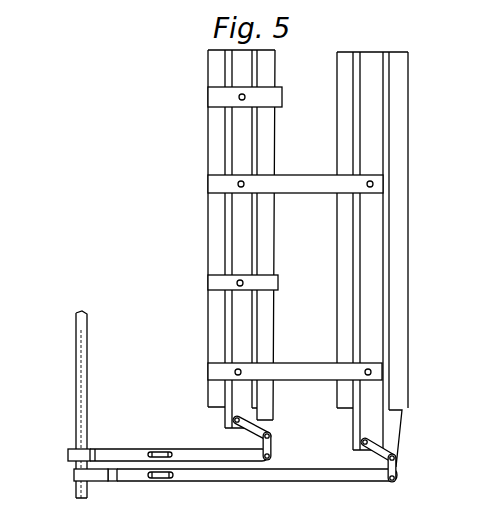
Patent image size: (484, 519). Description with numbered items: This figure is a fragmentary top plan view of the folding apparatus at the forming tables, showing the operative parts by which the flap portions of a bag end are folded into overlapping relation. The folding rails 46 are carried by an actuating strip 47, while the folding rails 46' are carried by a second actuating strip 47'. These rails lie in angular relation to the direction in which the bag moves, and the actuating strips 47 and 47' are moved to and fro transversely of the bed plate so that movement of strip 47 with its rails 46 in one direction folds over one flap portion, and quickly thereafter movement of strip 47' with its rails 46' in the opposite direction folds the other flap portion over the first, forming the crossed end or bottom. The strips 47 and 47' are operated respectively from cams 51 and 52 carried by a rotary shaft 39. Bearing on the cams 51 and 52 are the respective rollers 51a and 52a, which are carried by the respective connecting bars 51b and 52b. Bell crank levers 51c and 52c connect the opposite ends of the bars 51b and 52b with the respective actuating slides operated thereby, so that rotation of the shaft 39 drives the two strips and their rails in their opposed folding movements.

The rotary shaft 39 is at (83, 352).
The folding rail 46 is at (261, 184).
The folding rail 46' is at (295, 267).
The actuating strip 47 is at (220, 239).
The actuating strip 47' is at (387, 259).
The cam 51 is at (72, 452).
The roller 51a is at (95, 452).
The connecting bar 51b is at (196, 452).
The bell crank lever 51c is at (272, 443).
The cam 52 is at (91, 476).
The roller 52a is at (122, 478).
The connecting bar 52b is at (213, 478).
The bell crank lever 52c is at (395, 467).